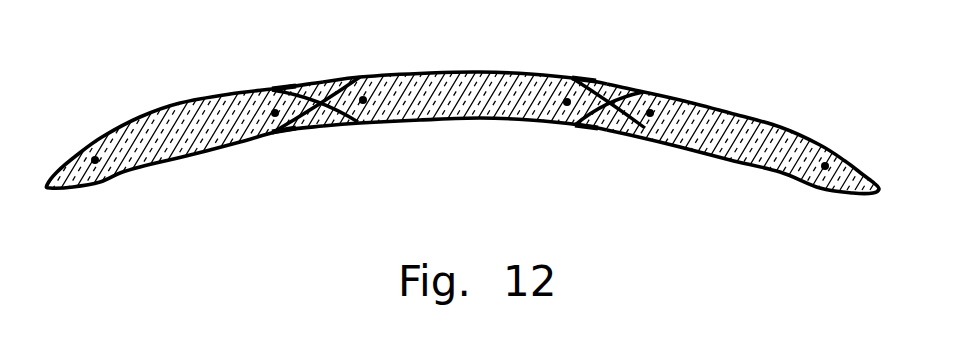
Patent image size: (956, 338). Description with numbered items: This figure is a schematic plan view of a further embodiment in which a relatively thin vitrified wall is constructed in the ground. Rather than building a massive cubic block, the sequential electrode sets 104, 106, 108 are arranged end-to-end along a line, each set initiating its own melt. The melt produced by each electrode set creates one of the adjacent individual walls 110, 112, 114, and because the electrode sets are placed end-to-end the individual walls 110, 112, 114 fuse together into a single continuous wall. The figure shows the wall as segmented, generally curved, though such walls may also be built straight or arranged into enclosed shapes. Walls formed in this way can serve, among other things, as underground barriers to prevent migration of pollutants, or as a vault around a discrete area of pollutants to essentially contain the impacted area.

The electrode set 104 is at (823, 168).
The electrode set 106 is at (567, 105).
The electrode set 108 is at (275, 115).
The individual wall 110 is at (753, 140).
The individual wall 112 is at (457, 97).
The individual wall 114 is at (177, 128).